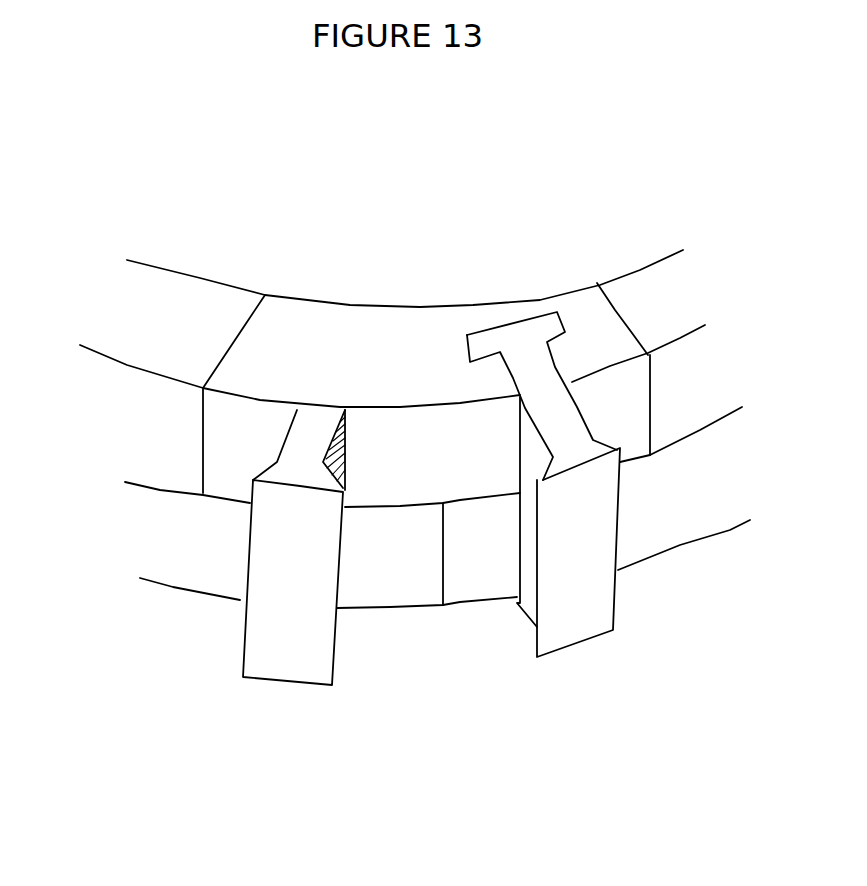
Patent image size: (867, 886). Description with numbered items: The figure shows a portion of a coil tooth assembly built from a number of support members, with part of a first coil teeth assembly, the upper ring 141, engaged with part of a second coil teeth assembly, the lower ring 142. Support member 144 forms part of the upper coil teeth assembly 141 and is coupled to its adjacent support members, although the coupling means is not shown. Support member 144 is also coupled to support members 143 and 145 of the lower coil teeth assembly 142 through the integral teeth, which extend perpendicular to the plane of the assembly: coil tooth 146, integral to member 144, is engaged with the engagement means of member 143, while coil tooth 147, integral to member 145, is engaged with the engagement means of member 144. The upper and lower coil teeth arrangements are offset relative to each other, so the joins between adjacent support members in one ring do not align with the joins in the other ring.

The first coil teeth assembly 141 is at (400, 506).
The second coil teeth assembly 142 is at (404, 564).
The support member 143 is at (197, 566).
The support member 144 is at (405, 338).
The support member 145 is at (690, 548).
The coil tooth 146 is at (310, 677).
The coil tooth 147 is at (587, 641).